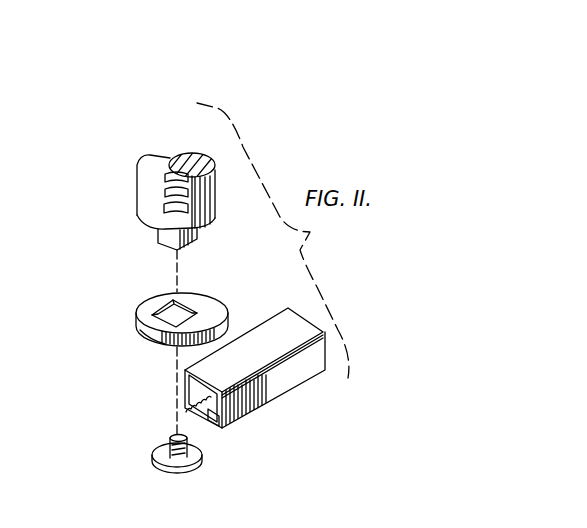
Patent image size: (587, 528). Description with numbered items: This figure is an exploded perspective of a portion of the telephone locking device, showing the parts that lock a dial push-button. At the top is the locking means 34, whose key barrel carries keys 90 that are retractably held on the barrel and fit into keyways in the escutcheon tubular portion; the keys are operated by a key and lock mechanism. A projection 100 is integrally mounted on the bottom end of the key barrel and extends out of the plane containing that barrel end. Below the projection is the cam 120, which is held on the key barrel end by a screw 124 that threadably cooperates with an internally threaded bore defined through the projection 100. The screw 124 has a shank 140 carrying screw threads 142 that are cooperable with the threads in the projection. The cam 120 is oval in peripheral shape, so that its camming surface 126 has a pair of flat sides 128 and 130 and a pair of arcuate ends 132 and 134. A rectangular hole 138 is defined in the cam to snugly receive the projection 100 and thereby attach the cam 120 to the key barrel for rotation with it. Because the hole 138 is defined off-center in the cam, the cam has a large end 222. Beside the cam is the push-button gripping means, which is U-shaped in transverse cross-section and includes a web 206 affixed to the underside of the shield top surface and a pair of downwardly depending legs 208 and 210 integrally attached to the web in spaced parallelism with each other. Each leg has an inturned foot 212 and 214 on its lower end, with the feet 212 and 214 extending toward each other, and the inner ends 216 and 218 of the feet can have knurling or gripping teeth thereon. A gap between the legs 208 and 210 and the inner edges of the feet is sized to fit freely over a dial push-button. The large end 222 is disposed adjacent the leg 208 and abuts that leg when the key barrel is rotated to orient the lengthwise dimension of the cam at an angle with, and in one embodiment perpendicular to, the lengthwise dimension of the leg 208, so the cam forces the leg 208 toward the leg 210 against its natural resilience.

The locking means 34 is at (148, 175).
The keys 90 is at (165, 193).
The projection 100 is at (158, 236).
The cam 120 is at (130, 320).
The camming surface 126 is at (148, 338).
The flat side 128 is at (160, 344).
The flat side 130 is at (205, 298).
The arcuate end 132 is at (176, 297).
The arcuate end 134 is at (257, 304).
The rectangular hole 138 is at (150, 313).
The large end 222 is at (203, 327).
The web 206 is at (298, 328).
The leg 210 is at (310, 357).
The leg 208 is at (186, 390).
The inturned foot 212 is at (184, 409).
The inturned foot 214 is at (215, 432).
The inner end 216 is at (193, 412).
The inner end 218 is at (210, 410).
The screw 124 is at (185, 478).
The shank 140 is at (177, 452).
The screw threads 142 is at (168, 460).